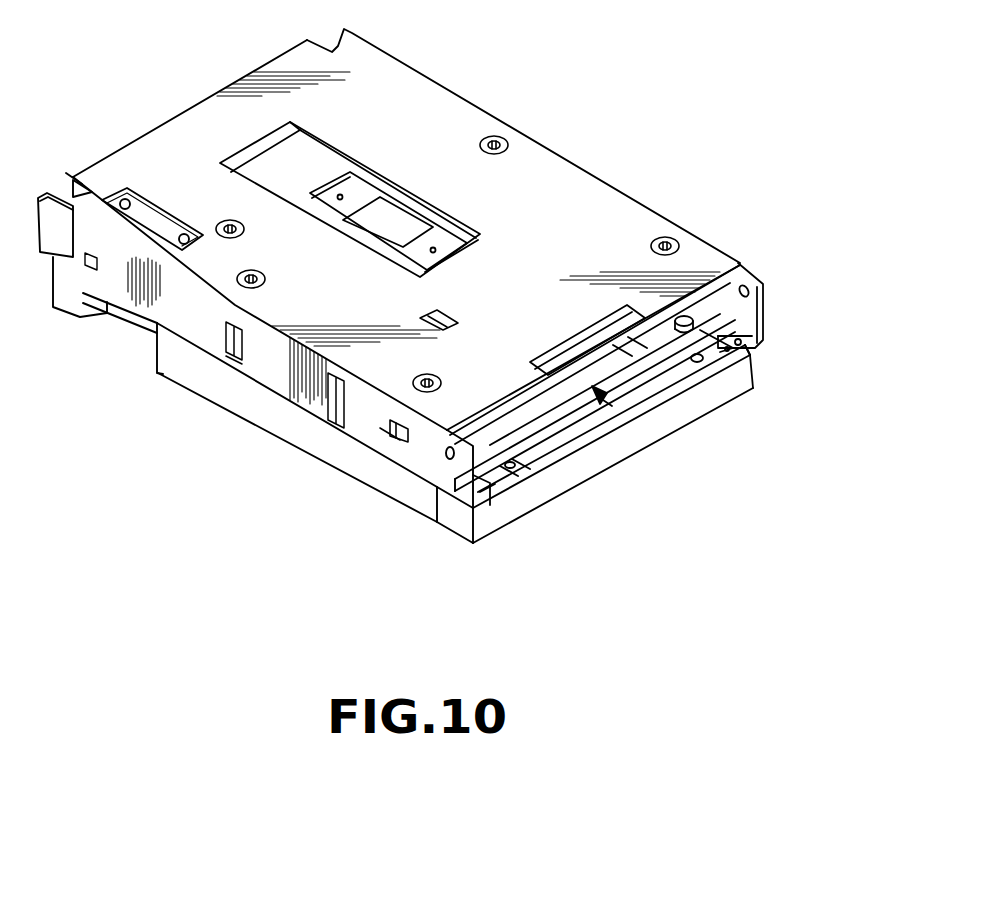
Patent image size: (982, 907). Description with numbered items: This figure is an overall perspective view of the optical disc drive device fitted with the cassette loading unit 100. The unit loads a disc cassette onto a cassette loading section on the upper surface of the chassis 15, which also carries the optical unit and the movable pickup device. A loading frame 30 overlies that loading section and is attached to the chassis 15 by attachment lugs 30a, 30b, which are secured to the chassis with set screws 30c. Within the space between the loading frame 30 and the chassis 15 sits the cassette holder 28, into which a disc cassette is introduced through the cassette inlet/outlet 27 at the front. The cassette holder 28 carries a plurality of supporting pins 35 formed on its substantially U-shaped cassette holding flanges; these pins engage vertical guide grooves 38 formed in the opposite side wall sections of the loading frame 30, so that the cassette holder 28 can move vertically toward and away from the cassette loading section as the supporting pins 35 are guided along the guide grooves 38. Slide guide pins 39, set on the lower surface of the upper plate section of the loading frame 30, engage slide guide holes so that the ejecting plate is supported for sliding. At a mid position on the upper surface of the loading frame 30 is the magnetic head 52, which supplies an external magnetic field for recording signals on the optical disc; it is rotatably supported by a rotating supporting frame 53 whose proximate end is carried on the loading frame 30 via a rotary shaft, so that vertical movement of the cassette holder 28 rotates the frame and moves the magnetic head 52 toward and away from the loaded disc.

The cassette loading unit 100 is at (236, 60).
The loading frame 30 is at (597, 190).
The attachment lug 30a is at (748, 350).
The attachment lug 30b is at (487, 512).
The set screw 30c is at (722, 388).
The slide guide pin 39 is at (498, 140).
The magnetic head 52 is at (360, 190).
The rotating supporting frame 53 is at (420, 235).
The chassis 15 is at (720, 392).
The cassette inlet/outlet 27 is at (598, 393).
The cassette holder 28 is at (607, 340).
The supporting pin 35 is at (223, 332).
The guide groove 38 is at (235, 358).